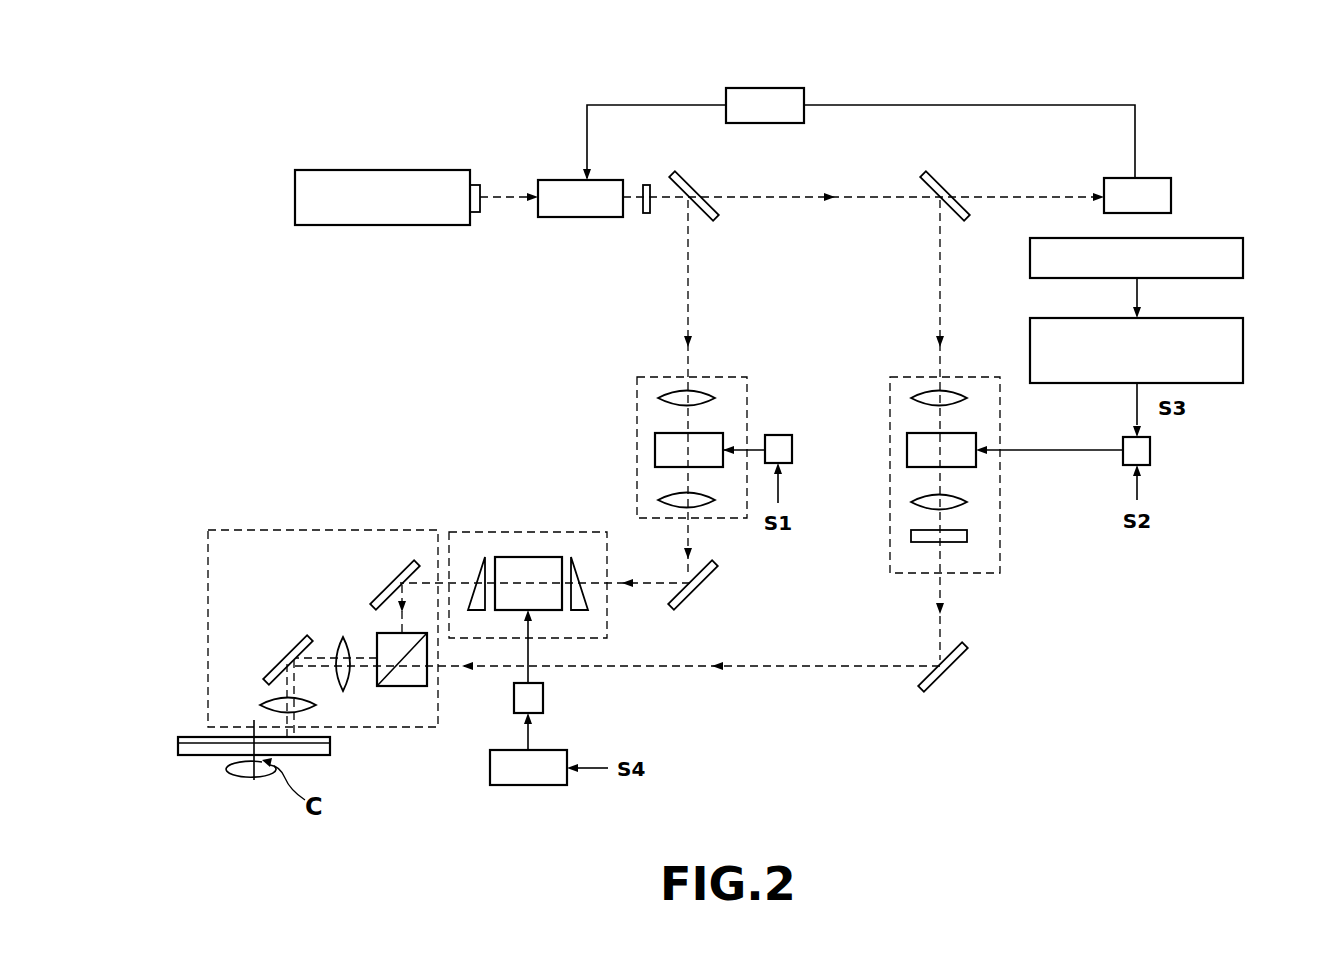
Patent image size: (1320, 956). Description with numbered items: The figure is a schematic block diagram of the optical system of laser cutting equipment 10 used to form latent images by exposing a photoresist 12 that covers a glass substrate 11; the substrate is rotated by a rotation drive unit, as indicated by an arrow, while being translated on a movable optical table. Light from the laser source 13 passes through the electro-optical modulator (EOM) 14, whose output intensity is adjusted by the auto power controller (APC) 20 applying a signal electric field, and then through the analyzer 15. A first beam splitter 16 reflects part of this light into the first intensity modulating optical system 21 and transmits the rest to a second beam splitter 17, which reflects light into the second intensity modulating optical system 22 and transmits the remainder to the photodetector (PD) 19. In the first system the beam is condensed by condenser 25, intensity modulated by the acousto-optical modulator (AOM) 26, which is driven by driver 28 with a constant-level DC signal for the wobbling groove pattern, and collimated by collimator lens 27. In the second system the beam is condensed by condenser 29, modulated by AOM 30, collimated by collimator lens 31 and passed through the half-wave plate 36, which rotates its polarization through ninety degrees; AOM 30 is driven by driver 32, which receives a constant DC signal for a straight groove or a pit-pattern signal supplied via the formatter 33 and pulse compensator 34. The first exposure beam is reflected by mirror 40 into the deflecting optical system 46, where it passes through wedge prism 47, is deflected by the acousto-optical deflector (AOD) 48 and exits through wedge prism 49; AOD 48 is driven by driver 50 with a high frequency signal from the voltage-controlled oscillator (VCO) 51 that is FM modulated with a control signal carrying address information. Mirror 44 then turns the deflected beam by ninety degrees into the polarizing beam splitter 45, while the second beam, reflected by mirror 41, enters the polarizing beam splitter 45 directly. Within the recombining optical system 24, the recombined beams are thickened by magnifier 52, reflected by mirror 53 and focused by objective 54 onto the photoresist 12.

The laser cutting equipment 10 is at (1234, 67).
The glass substrate 11 is at (178, 756).
The photoresist 12 is at (180, 737).
The laser source 13 is at (455, 171).
The electro-optical modulator (EOM) 14 is at (608, 181).
The analyzer 15 is at (647, 214).
The first beam splitter 16 is at (695, 189).
The second beam splitter 17 is at (947, 189).
The photodetector (PD) 19 is at (1168, 179).
The auto power controller (APC) 20 is at (806, 94).
The first intensity modulating optical system 21 is at (648, 377).
The second intensity modulating optical system 22 is at (900, 377).
The optical system 24 is at (323, 530).
The condenser 25 is at (657, 398).
The acousto-optical modulator (AOM) 26 is at (655, 450).
The collimator lens 27 is at (657, 500).
The driver 28 is at (777, 435).
The condenser 29 is at (910, 398).
The acousto-optical modulator (AOM) 30 is at (907, 450).
The collimator lens 31 is at (910, 502).
The driver 32 is at (1152, 450).
The formatter 33 is at (1222, 238).
The pulse compensator 34 is at (1236, 318).
The λ/2-wave plate 36 is at (910, 536).
The mirror 40 is at (708, 582).
The mirror 41 is at (952, 672).
The mirror 44 is at (380, 592).
The polarizing beam splitter 45 is at (420, 688).
The deflecting optical system 46 is at (452, 530).
The wedge prism 47 is at (588, 612).
The acousto-optical deflector (AOD) 48 is at (532, 556).
The wedge prism 49 is at (485, 556).
The driver 50 is at (545, 698).
The voltage-controlled oscillator (VCO) 51 is at (537, 786).
The magnifier 52 is at (340, 636).
The mirror 53 is at (286, 648).
The objective 54 is at (318, 706).